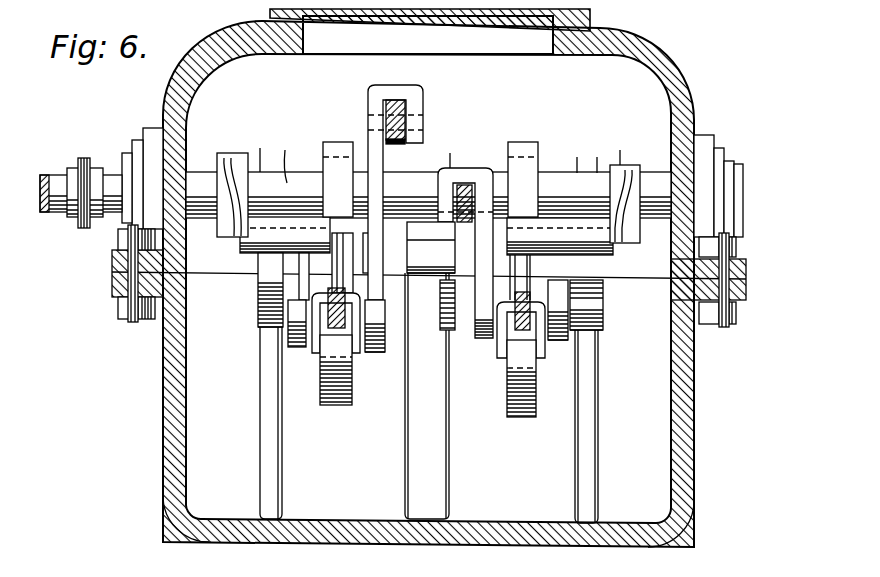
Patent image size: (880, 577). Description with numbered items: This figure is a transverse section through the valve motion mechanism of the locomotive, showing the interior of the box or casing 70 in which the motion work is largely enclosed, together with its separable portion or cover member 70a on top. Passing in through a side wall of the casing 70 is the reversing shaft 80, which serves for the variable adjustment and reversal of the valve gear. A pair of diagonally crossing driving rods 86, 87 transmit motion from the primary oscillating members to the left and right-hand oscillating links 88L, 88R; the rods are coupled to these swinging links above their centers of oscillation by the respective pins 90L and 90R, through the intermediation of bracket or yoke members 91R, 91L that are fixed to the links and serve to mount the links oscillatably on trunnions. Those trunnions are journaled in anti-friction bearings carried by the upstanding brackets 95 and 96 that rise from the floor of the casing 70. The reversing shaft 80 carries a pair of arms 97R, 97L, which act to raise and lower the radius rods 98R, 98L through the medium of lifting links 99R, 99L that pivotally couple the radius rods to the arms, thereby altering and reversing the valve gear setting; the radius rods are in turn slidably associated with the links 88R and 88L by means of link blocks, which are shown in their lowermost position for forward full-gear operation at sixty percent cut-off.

The casing 70 is at (167, 399).
The cover member 70a is at (173, 107).
The reversing shaft 80 is at (291, 172).
The driving rod 86 is at (461, 186).
The driving rod 87 is at (397, 144).
The right-hand oscillating link 88R is at (336, 143).
The left-hand oscillating link 88L is at (527, 147).
The pin 90R is at (423, 121).
The pin 90L is at (440, 184).
The bracket or yoke member 91R is at (378, 183).
The bracket or yoke member 91L is at (474, 276).
The upstanding bracket 95 is at (270, 491).
The upstanding bracket 96 is at (415, 452).
The arm 97R is at (245, 173).
The arm 97L is at (613, 184).
The radius rod 98R is at (326, 293).
The radius rod 98L is at (516, 316).
The lifting link 99R is at (334, 283).
The lifting link 99L is at (520, 273).